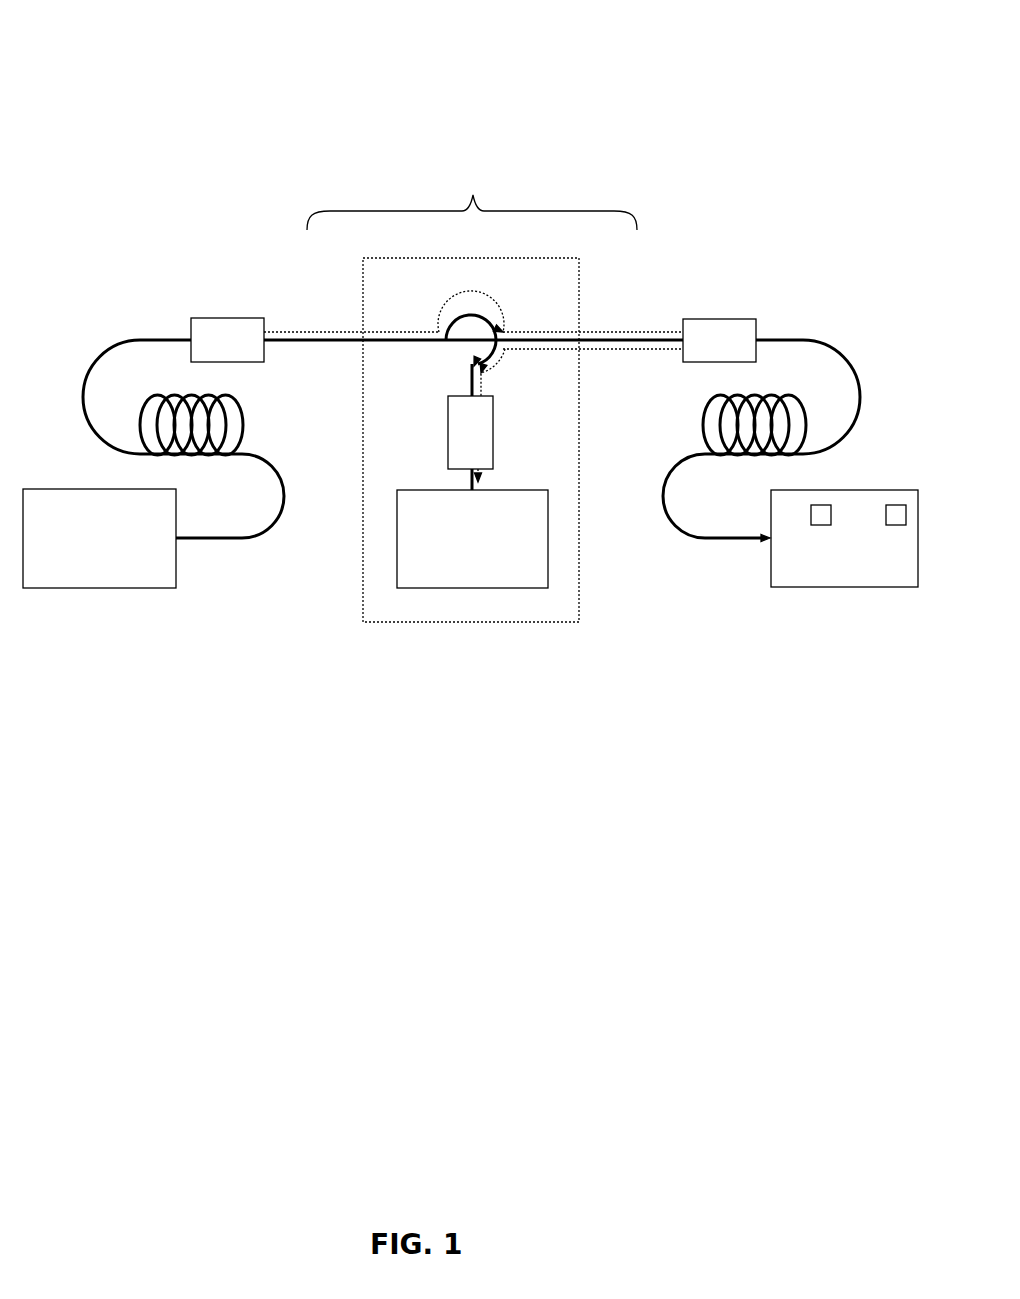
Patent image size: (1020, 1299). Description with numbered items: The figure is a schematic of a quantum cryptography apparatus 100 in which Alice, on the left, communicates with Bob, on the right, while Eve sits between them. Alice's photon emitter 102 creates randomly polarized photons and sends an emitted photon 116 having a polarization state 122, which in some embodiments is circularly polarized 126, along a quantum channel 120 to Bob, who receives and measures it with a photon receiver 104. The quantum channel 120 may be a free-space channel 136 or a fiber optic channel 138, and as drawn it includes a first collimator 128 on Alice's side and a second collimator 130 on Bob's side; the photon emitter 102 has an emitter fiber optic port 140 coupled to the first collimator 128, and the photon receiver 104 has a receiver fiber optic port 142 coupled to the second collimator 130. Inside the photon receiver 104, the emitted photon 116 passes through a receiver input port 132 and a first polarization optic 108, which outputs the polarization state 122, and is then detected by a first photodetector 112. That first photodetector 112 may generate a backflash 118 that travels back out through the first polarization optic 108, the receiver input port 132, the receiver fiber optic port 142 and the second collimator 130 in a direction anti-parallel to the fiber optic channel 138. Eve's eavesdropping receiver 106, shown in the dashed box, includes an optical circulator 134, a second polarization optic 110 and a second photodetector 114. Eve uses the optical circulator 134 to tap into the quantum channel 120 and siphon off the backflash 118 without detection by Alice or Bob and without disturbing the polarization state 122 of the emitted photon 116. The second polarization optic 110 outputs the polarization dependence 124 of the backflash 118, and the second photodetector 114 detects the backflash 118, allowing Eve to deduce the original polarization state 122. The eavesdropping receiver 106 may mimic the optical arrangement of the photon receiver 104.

The quantum cryptography apparatus 100 is at (740, 80).
The photon emitter 102 is at (36, 595).
The photon receiver 104 is at (904, 596).
The eavesdropping receiver 106 is at (383, 630).
The first polarization optic 108 is at (821, 506).
The second polarization optic 110 is at (493, 425).
The first photodetector 112 is at (897, 506).
The second photodetector 114 is at (485, 588).
The emitted photon 116 is at (302, 326).
The backflash 118 is at (588, 358).
The quantum channel 120 is at (472, 200).
The polarization state 122 is at (345, 333).
The polarization dependence 124 is at (566, 349).
The circularly polarized 126 is at (400, 332).
The first collimator 128 is at (232, 318).
The second collimator 130 is at (722, 319).
The receiver input port 132 is at (762, 546).
The optical circulator 134 is at (458, 346).
The free-space channel 136 is at (334, 348).
The fiber optic channel 138 is at (607, 324).
The emitter fiber optic port 140 is at (93, 372).
The receiver fiber optic port 142 is at (857, 372).